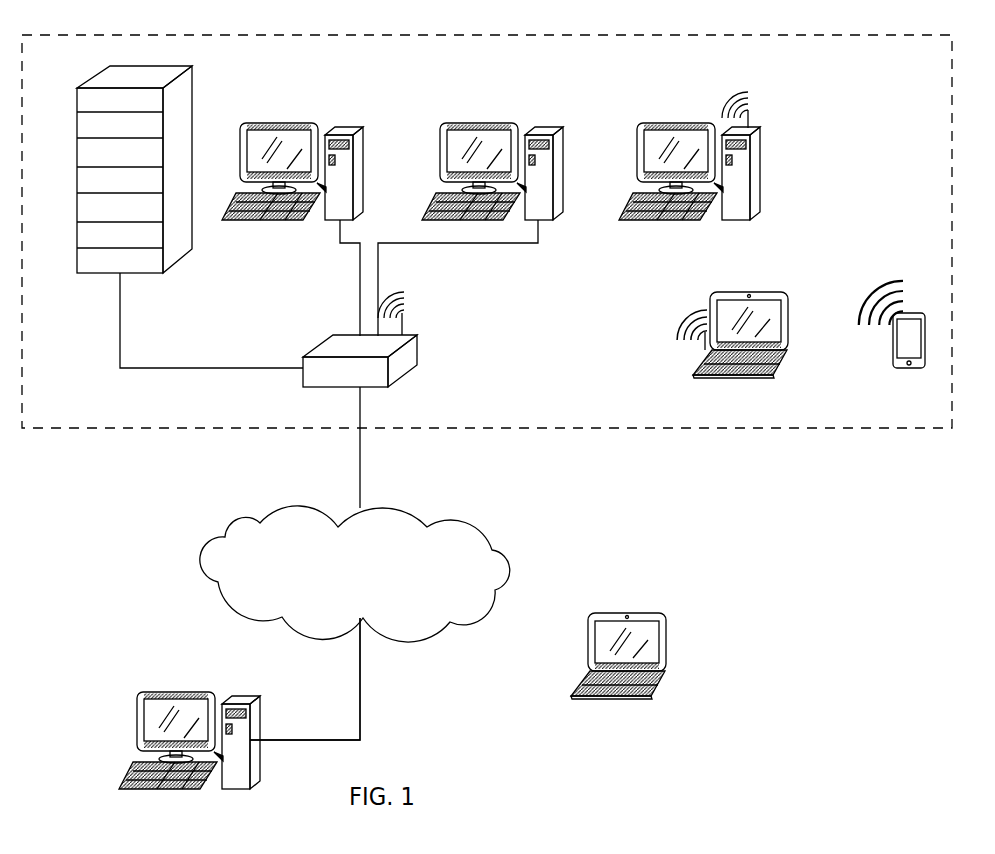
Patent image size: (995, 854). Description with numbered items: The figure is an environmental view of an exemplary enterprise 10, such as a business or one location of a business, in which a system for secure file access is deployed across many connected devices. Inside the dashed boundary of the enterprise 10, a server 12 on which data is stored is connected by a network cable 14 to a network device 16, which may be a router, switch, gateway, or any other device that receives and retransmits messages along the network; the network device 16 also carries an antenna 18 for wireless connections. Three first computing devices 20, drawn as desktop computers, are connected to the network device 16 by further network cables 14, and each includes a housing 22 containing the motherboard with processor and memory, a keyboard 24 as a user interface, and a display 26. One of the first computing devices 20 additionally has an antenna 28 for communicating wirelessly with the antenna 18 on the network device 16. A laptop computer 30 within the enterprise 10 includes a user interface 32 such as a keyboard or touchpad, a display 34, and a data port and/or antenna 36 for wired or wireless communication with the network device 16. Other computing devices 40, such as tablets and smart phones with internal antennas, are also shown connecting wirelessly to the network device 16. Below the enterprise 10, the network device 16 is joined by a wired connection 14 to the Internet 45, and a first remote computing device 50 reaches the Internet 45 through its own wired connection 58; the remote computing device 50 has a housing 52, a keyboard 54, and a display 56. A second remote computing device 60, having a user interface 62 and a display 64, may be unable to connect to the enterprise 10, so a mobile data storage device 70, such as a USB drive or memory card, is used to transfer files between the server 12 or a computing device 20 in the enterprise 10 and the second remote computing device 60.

The enterprise 10 is at (953, 72).
The server 12 is at (116, 66).
The network cable 14 is at (360, 273).
The network device 16 is at (410, 370).
The antenna 18 is at (405, 331).
The first computing device 20 is at (499, 140).
The housing 22 is at (356, 168).
The keyboard 24 is at (232, 205).
The display 26 is at (252, 124).
The antenna 28 is at (752, 118).
The laptop computer 30 is at (732, 334).
The user interface 32 is at (782, 357).
The display 34 is at (720, 292).
The antenna 36 is at (703, 348).
The other computing device 40 is at (900, 387).
The Internet 45 is at (476, 528).
The first remote computing device 50 is at (195, 710).
The housing 52 is at (257, 731).
The keyboard 54 is at (130, 778).
The display 56 is at (165, 692).
The wired connection 58 is at (360, 678).
The second remote computing device 60 is at (626, 626).
The user interface 62 is at (572, 694).
The display 64 is at (612, 613).
The mobile data storage device 70 is at (667, 681).